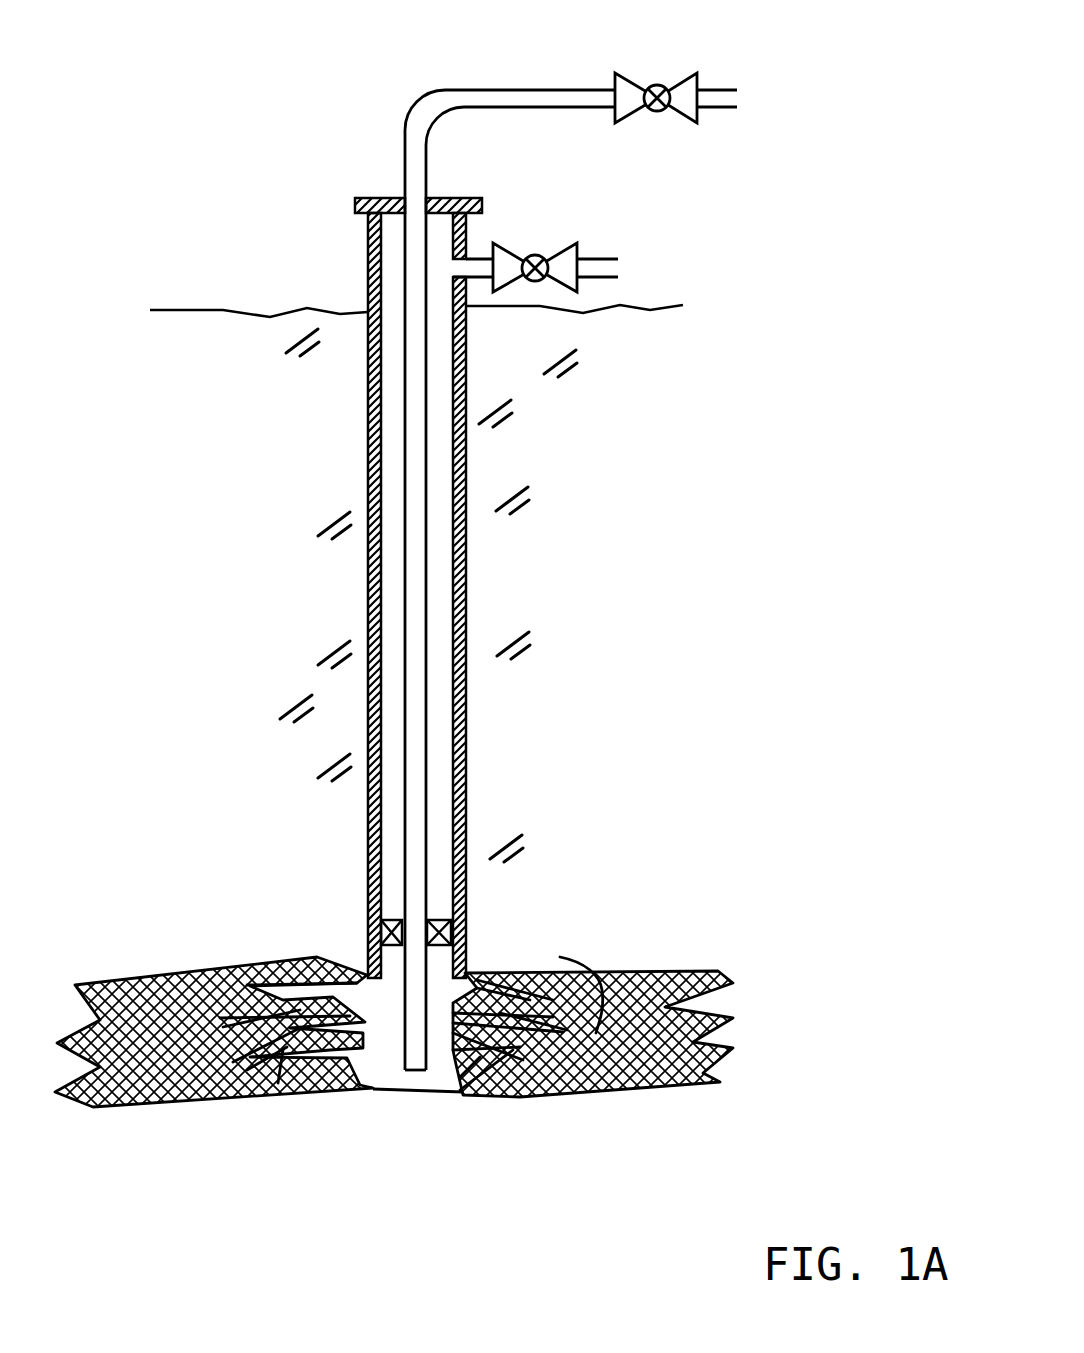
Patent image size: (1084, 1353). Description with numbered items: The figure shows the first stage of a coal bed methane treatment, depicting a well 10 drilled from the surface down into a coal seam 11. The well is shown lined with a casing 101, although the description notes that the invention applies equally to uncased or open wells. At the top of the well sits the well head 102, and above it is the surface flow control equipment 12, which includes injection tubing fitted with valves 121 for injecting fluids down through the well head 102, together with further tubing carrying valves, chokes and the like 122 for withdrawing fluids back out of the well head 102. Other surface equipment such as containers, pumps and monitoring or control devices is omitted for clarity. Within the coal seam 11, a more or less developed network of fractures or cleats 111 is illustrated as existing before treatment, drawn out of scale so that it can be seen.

The well 10 is at (300, 554).
The casing 101 is at (462, 452).
The well head 102 is at (368, 240).
The coal seam 11 is at (187, 968).
The fractures or cleats 111 is at (484, 972).
The surface flow control equipment 12 is at (350, 140).
The valves 121 is at (660, 90).
The valves, chokes and the like 122 is at (556, 256).